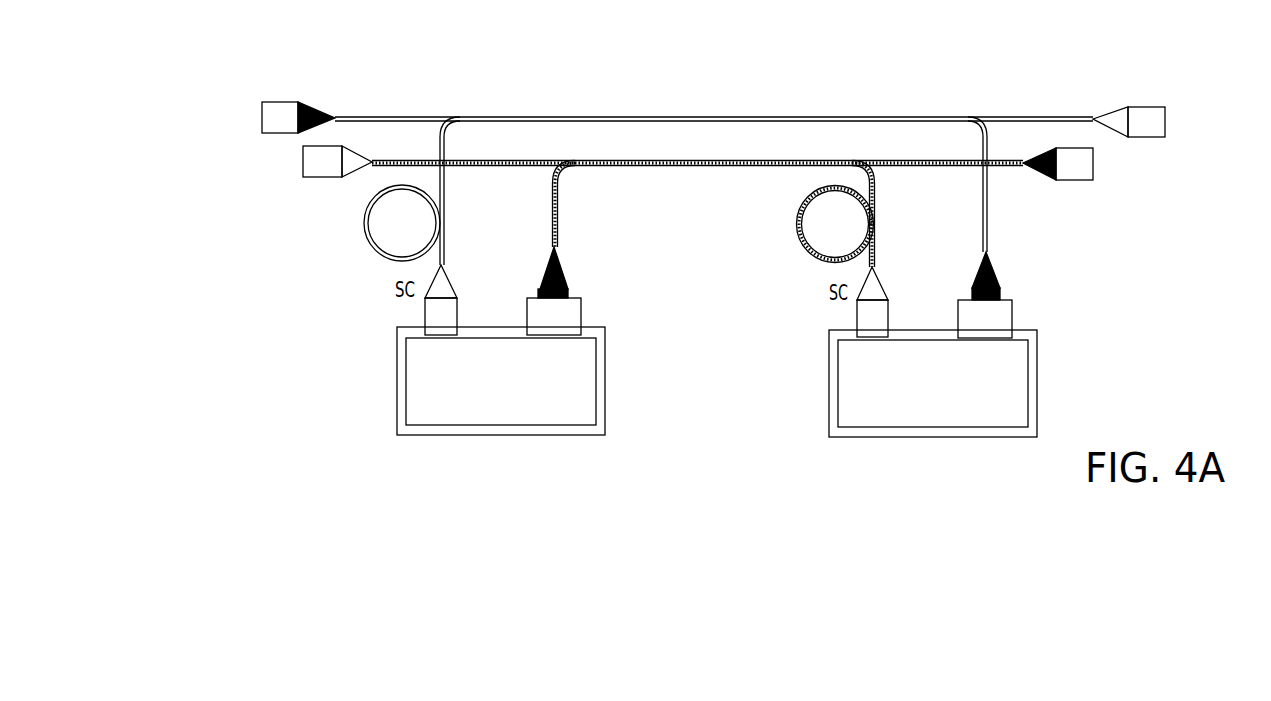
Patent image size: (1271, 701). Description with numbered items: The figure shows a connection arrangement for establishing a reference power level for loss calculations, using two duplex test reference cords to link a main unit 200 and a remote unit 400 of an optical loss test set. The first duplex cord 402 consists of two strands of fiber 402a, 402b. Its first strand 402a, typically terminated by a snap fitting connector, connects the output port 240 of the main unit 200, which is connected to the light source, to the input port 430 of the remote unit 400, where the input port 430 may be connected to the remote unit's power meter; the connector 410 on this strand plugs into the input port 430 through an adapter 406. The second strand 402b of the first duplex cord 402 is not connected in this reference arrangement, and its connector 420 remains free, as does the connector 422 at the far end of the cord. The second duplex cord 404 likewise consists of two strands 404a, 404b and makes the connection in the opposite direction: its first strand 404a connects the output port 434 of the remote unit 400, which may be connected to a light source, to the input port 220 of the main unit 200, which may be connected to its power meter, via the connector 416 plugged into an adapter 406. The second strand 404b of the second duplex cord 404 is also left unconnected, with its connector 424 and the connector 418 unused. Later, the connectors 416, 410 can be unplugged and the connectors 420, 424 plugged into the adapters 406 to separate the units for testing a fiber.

The main unit 200 is at (405, 398).
The input port 220 is at (560, 365).
The output port 240 is at (425, 365).
The remote unit 400 is at (1037, 380).
The first duplex cord 402 is at (847, 117).
The first strand 402a is at (446, 222).
The second strand 402b is at (352, 117).
The second duplex cord 404 is at (610, 160).
The first strand 404a is at (560, 205).
The second strand 404b is at (497, 160).
The adapter 406 is at (581, 311).
The connector 410 is at (566, 278).
The connector 416 is at (1000, 290).
The connector 418 is at (303, 162).
The connector 420 is at (262, 102).
The connector 422 is at (1165, 122).
The connector 424 is at (1093, 165).
The input port 430 is at (990, 360).
The output port 434 is at (865, 372).